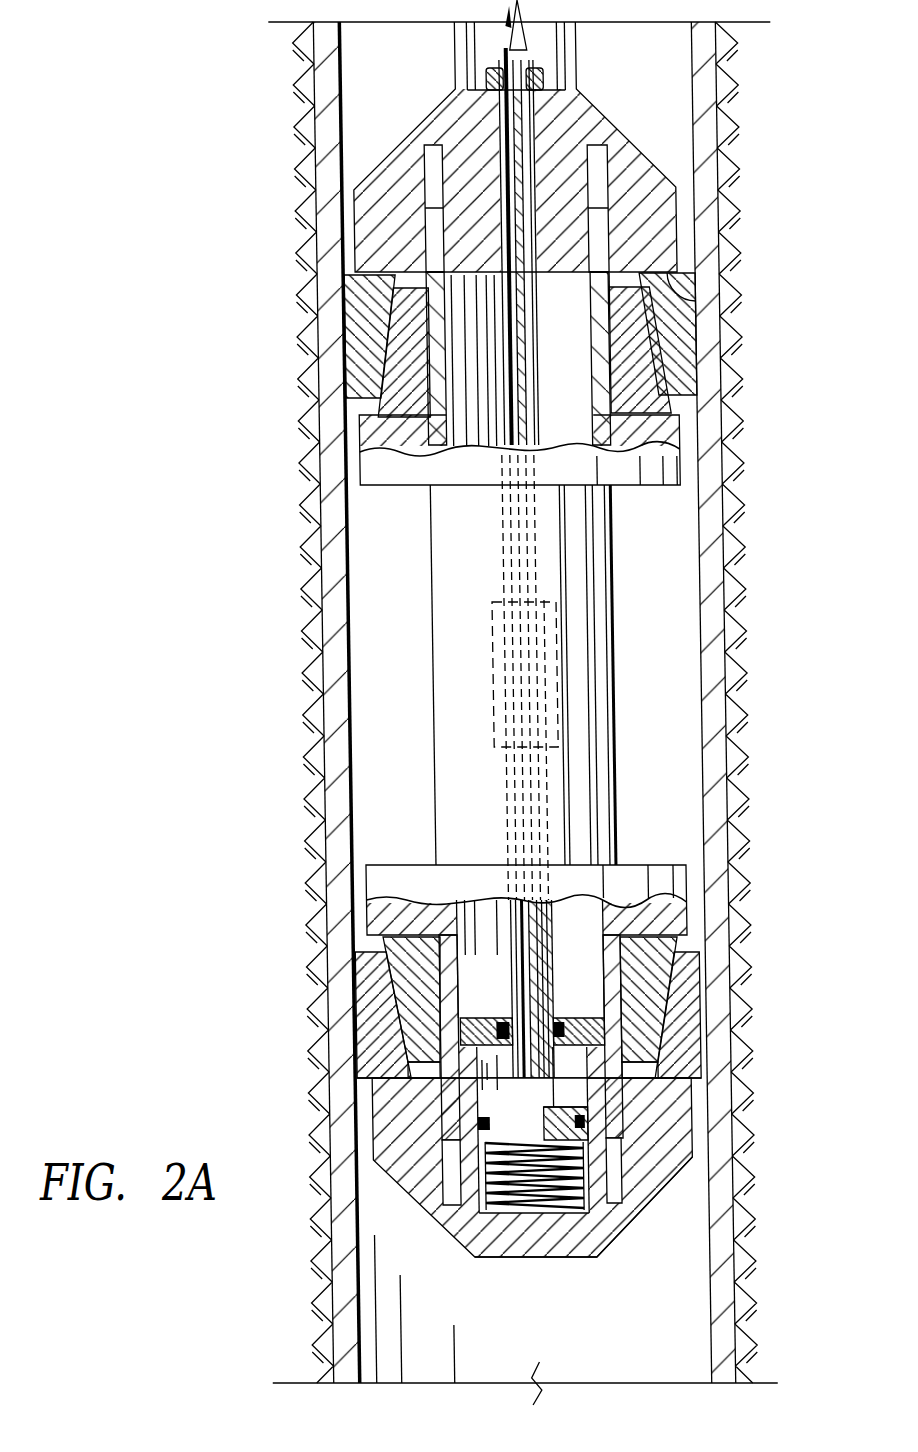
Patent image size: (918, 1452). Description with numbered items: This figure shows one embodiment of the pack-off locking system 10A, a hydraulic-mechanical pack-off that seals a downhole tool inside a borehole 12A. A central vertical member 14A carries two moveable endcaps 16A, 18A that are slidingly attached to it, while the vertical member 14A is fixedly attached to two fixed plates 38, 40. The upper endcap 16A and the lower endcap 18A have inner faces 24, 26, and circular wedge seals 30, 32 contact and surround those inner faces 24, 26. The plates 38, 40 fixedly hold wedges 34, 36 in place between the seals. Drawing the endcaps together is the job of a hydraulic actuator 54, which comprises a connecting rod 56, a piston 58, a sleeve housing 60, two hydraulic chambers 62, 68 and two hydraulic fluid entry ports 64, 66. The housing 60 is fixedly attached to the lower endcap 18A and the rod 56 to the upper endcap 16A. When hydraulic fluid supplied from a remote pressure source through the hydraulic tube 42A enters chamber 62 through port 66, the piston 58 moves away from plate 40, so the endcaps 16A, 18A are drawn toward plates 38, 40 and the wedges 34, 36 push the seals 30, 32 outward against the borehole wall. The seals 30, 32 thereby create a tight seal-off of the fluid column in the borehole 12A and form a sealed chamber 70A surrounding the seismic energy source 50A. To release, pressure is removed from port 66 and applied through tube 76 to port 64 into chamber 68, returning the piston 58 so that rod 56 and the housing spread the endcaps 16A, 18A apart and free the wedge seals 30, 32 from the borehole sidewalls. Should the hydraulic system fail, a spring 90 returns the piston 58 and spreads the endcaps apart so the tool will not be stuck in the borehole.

The pack-off locking system 10A is at (638, 517).
The borehole 12A is at (686, 578).
The vertical member 14A is at (607, 755).
The endcap 16A is at (660, 229).
The endcap 18A is at (661, 1125).
The inner face 24 is at (681, 289).
The inner face 26 is at (688, 1110).
The wedge seal 30 is at (675, 340).
The wedge seal 32 is at (672, 1027).
The wedge 34 is at (632, 377).
The wedge 36 is at (640, 960).
The fixed plate 38 is at (661, 468).
The fixed plate 40 is at (662, 882).
The hydraulic tube 42A is at (528, 47).
The seismic energy source 50A is at (547, 661).
The hydraulic actuator 54 is at (488, 1240).
The connecting rod 56 is at (536, 365).
The piston 58 is at (541, 1113).
The sleeve housing 60 is at (563, 1023).
The hydraulic chamber 62 is at (488, 1050).
The hydraulic fluid entry port 64 is at (573, 1176).
The hydraulic fluid entry port 66 is at (460, 1093).
The hydraulic chamber 68 is at (578, 1254).
The sealed chamber 70A is at (655, 795).
The tube 76 is at (540, 45).
The spring 90 is at (522, 1210).